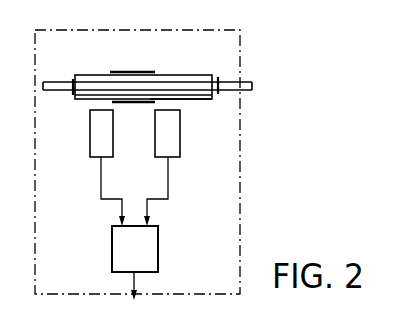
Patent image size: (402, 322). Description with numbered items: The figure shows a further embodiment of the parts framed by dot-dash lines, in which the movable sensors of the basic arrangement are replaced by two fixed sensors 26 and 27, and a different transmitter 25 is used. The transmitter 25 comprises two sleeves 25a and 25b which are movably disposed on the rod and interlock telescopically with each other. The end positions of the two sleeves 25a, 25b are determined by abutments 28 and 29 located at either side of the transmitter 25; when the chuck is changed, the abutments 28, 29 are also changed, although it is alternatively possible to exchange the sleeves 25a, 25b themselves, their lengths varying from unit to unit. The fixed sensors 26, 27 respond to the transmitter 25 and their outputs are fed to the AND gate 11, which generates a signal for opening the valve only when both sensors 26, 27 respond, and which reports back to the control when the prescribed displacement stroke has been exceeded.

The AND gate 11 is at (158, 248).
The transmitter 25 is at (153, 73).
The sleeve 25a is at (90, 75).
The sleeve 25b is at (192, 99).
The fixed sensor 26 is at (113, 142).
The fixed sensor 27 is at (180, 142).
The abutment 28 is at (72, 80).
The abutment 29 is at (218, 77).